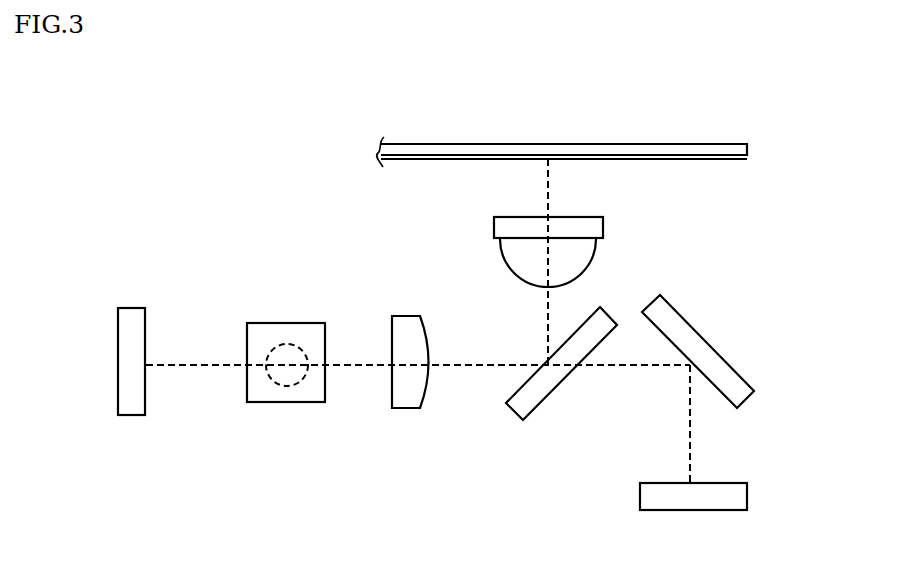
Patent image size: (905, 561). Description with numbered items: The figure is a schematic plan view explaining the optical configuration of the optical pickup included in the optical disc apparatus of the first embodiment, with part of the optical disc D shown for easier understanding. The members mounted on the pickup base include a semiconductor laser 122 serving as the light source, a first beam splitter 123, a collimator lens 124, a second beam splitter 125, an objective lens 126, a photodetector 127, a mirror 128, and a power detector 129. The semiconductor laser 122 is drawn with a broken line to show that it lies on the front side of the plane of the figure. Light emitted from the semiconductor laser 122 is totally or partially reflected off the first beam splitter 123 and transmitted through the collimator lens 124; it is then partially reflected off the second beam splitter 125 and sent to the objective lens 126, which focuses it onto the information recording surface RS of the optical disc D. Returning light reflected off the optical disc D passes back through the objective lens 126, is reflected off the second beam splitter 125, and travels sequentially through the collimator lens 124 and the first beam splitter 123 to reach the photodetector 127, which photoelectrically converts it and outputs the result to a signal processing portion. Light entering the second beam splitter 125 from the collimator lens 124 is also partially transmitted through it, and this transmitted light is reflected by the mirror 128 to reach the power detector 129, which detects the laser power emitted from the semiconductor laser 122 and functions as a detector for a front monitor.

The optical disc D is at (705, 143).
The information recording surface RS is at (604, 155).
The semiconductor laser 122 is at (287, 388).
The first beam splitter 123 is at (283, 370).
The collimator lens 124 is at (398, 316).
The second beam splitter 125 is at (523, 420).
The objective lens 126 is at (604, 232).
The photodetector 127 is at (129, 310).
The mirror 128 is at (705, 346).
The power detector 129 is at (740, 483).